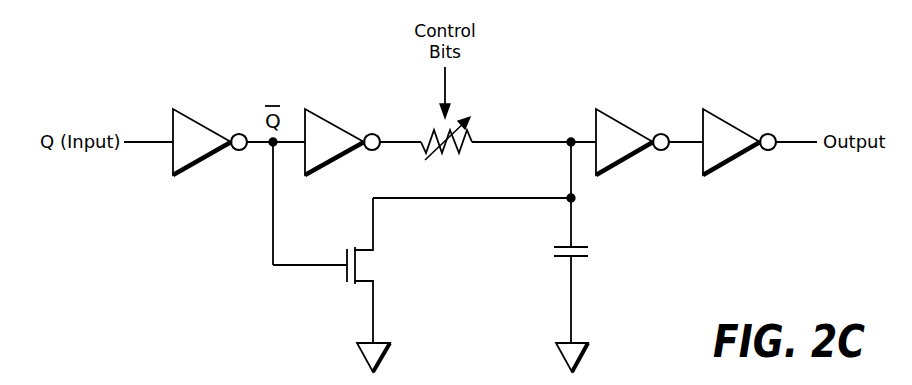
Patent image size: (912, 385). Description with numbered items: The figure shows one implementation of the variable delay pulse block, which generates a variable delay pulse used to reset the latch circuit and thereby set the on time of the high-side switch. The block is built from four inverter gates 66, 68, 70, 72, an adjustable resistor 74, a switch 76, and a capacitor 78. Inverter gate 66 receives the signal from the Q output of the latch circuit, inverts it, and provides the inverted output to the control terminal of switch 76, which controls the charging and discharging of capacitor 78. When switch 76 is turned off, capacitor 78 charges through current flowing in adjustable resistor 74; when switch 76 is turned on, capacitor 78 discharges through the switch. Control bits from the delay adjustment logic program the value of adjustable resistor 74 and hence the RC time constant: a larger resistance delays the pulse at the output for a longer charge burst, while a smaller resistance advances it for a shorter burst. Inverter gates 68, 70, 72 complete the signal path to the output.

The inverter gate 66 is at (188, 113).
The inverter gate 68 is at (321, 114).
The inverter gate 70 is at (607, 114).
The inverter gate 72 is at (714, 114).
The adjustable resistor 74 is at (462, 152).
The switch 76 is at (364, 286).
The capacitor 78 is at (561, 259).